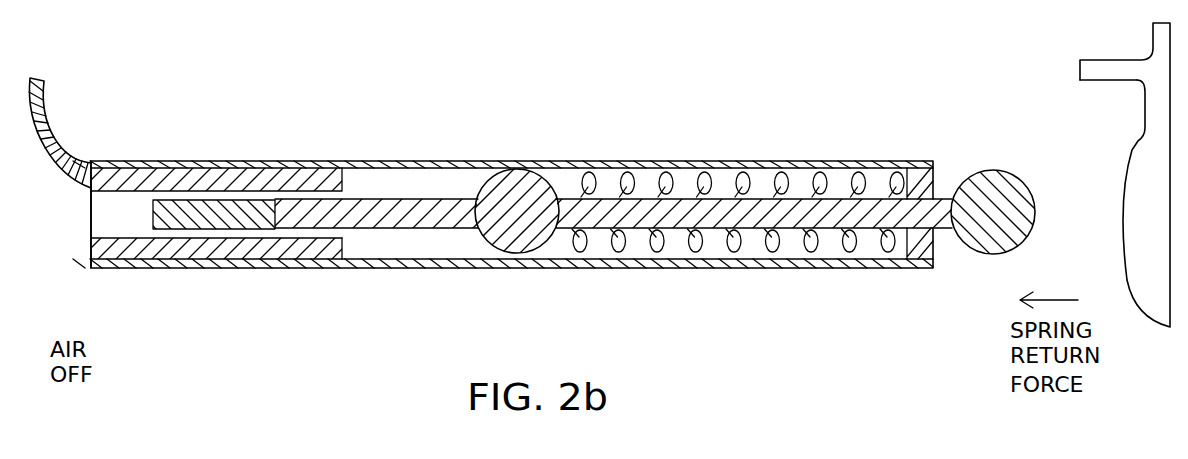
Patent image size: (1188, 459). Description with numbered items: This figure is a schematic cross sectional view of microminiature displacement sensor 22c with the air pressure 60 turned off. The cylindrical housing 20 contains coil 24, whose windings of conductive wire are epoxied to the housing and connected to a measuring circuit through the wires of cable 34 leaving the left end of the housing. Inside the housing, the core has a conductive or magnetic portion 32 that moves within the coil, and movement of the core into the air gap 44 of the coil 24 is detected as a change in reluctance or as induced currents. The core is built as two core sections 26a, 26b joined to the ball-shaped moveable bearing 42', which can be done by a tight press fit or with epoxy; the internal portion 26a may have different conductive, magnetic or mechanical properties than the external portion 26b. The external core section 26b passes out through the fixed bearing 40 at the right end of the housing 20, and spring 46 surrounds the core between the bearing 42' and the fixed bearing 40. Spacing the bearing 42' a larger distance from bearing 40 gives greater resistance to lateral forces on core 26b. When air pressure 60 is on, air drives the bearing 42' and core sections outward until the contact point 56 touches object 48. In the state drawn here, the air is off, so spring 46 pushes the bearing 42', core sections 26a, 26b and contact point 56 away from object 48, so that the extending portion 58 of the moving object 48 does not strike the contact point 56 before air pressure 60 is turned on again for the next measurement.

The cylindrical housing 20 is at (132, 168).
The coil 24 is at (188, 178).
The conductive or magnetic portion 32 is at (225, 203).
The core section 26a is at (393, 203).
The bearing 42' is at (594, 197).
The core section 26b is at (795, 220).
The spring 46 is at (783, 178).
The fixed bearing 40 is at (923, 175).
The contact point 56 is at (997, 185).
The object 48 is at (1140, 272).
The portion 58 is at (1090, 83).
The cable 34 is at (40, 98).
The air pressure 60 is at (40, 345).
The air gap 44 is at (135, 223).
The displacement sensor 22c is at (708, 117).